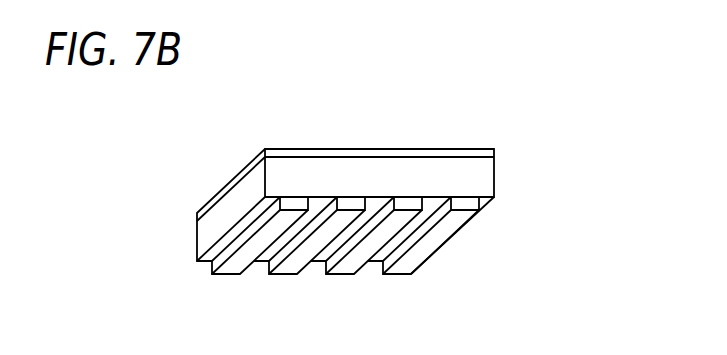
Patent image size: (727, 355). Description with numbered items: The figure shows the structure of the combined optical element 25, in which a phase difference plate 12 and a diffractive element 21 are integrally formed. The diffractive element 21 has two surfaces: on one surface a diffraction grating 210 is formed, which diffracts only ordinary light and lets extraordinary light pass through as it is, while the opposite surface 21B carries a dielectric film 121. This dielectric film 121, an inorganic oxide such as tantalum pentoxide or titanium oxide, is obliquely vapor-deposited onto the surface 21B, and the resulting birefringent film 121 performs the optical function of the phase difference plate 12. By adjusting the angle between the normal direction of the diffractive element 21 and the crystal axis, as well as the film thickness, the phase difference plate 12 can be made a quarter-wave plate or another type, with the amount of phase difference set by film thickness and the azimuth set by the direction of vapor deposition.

The diffraction grating 210 is at (143, 283).
The combined optical element 25 is at (557, 94).
The phase difference plate 12 is at (481, 152).
The dielectric film 121 is at (378, 147).
The surface 21B is at (314, 157).
The diffractive element 21 is at (483, 180).